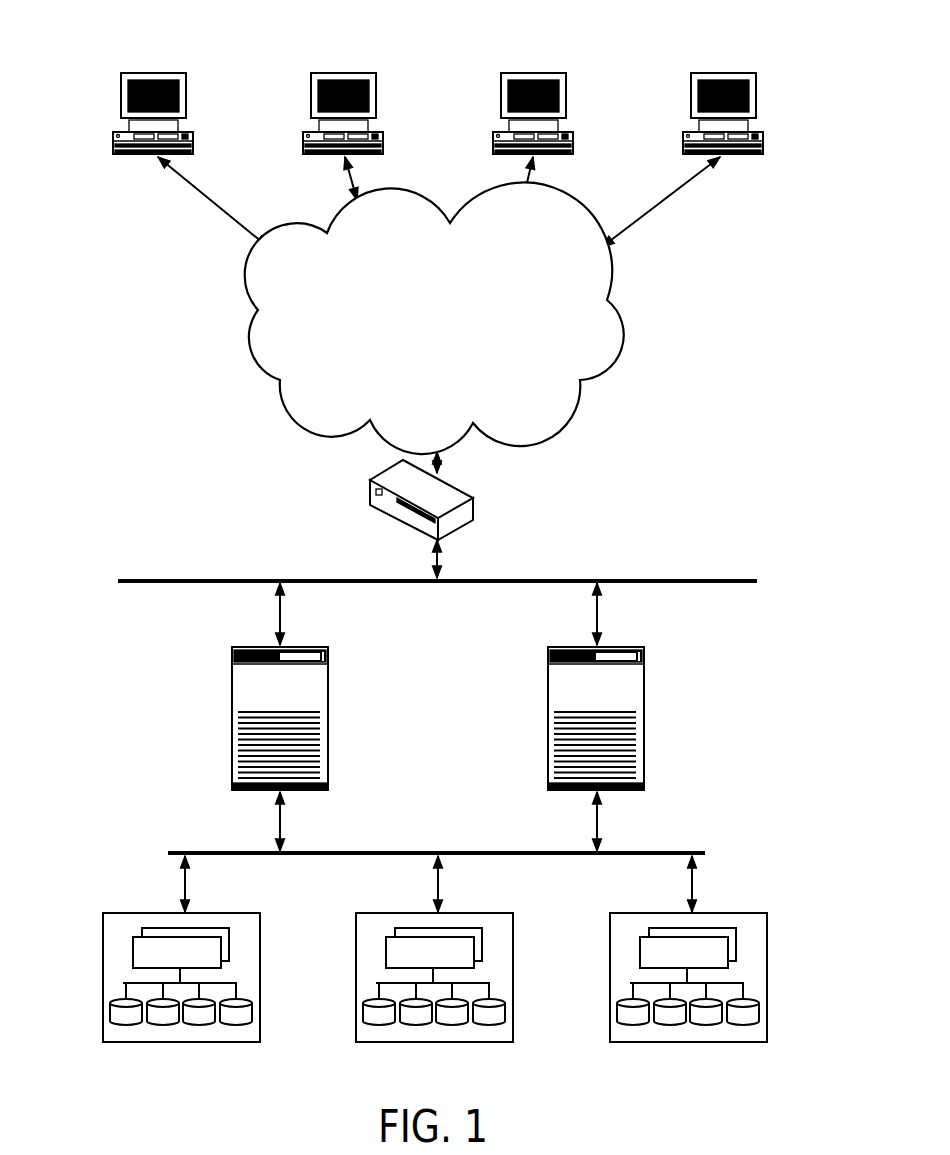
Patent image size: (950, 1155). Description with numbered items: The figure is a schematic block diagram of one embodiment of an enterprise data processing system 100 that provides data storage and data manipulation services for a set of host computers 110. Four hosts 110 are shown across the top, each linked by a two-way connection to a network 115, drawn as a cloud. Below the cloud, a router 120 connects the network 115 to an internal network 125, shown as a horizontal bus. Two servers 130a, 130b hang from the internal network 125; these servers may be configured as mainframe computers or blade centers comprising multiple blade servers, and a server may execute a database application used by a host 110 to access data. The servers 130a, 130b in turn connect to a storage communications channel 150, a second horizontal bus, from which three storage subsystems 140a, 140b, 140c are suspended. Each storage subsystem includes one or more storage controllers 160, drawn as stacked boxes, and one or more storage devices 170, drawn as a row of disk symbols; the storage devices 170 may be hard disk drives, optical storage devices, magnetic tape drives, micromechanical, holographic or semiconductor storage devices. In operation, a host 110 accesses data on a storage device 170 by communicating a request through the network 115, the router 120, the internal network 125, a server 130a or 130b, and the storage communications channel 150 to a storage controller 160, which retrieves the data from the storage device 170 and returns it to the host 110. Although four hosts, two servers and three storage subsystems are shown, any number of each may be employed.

The enterprise data processing system 100 is at (87, 57).
The host computer 110 is at (186, 74).
The network 115 is at (414, 344).
The router 120 is at (475, 498).
The internal network 125 is at (141, 578).
The server 130a is at (330, 645).
The server 130b is at (646, 645).
The storage subsystem 140a is at (260, 913).
The storage subsystem 140b is at (513, 913).
The storage subsystem 140c is at (767, 913).
The storage communications channel 150 is at (372, 851).
The storage controller 160 is at (133, 950).
The storage device 170 is at (110, 1012).